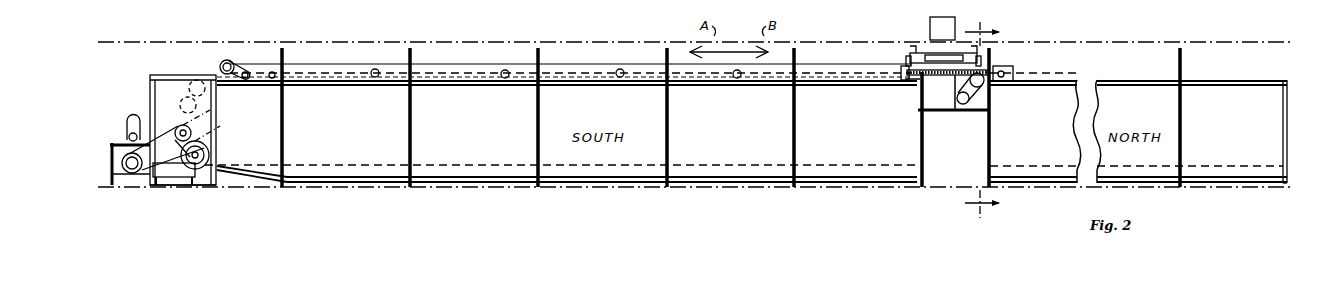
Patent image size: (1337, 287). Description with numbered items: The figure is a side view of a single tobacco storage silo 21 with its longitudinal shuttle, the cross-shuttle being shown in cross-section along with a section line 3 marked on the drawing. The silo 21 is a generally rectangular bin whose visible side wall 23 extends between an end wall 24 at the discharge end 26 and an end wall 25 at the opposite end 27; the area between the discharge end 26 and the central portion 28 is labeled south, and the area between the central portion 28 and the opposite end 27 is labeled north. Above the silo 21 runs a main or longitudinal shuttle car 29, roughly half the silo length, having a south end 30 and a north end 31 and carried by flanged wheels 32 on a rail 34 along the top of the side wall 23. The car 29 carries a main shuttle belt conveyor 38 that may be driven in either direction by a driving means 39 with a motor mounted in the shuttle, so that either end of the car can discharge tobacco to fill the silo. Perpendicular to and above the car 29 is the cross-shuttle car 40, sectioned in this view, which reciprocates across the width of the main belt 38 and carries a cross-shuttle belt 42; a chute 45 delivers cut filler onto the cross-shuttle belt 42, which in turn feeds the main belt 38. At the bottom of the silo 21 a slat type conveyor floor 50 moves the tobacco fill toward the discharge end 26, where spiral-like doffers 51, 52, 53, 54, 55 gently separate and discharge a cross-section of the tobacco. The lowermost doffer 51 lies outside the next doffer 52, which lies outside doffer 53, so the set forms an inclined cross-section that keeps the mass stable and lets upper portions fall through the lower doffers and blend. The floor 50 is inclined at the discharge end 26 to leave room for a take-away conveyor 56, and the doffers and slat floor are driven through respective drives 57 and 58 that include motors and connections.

The section line 3- 3 is at (987, 116).
The silo 21 is at (1046, 158).
The side wall 23 is at (731, 117).
The end wall 24 is at (150, 91).
The end wall 25 is at (1289, 125).
The discharge end 26 is at (177, 207).
The opposite end 27 is at (1280, 201).
The central portion 28 is at (948, 200).
The longitudinal shuttle car 29 is at (595, 62).
The south end 30 is at (239, 64).
The north end 31 is at (1013, 68).
The flanged wheels 32 is at (505, 79).
The rail 34 is at (582, 88).
The main shuttle belt conveyor 38 is at (473, 70).
The driving means 39 is at (229, 60).
The cross-shuttle car 40 is at (926, 50).
The cross-shuttle belt 42 is at (956, 53).
The chute 45 is at (944, 11).
The slat type conveyor floor 50 is at (336, 164).
The doffer 51 is at (208, 151).
The doffer 52 is at (193, 133).
The doffer 53 is at (204, 124).
The doffer 54 is at (184, 105).
The doffer 55 is at (197, 79).
The take-away conveyor 56 is at (185, 178).
The doffer drive 57 is at (140, 113).
The slat conveyor drive 58 is at (132, 174).